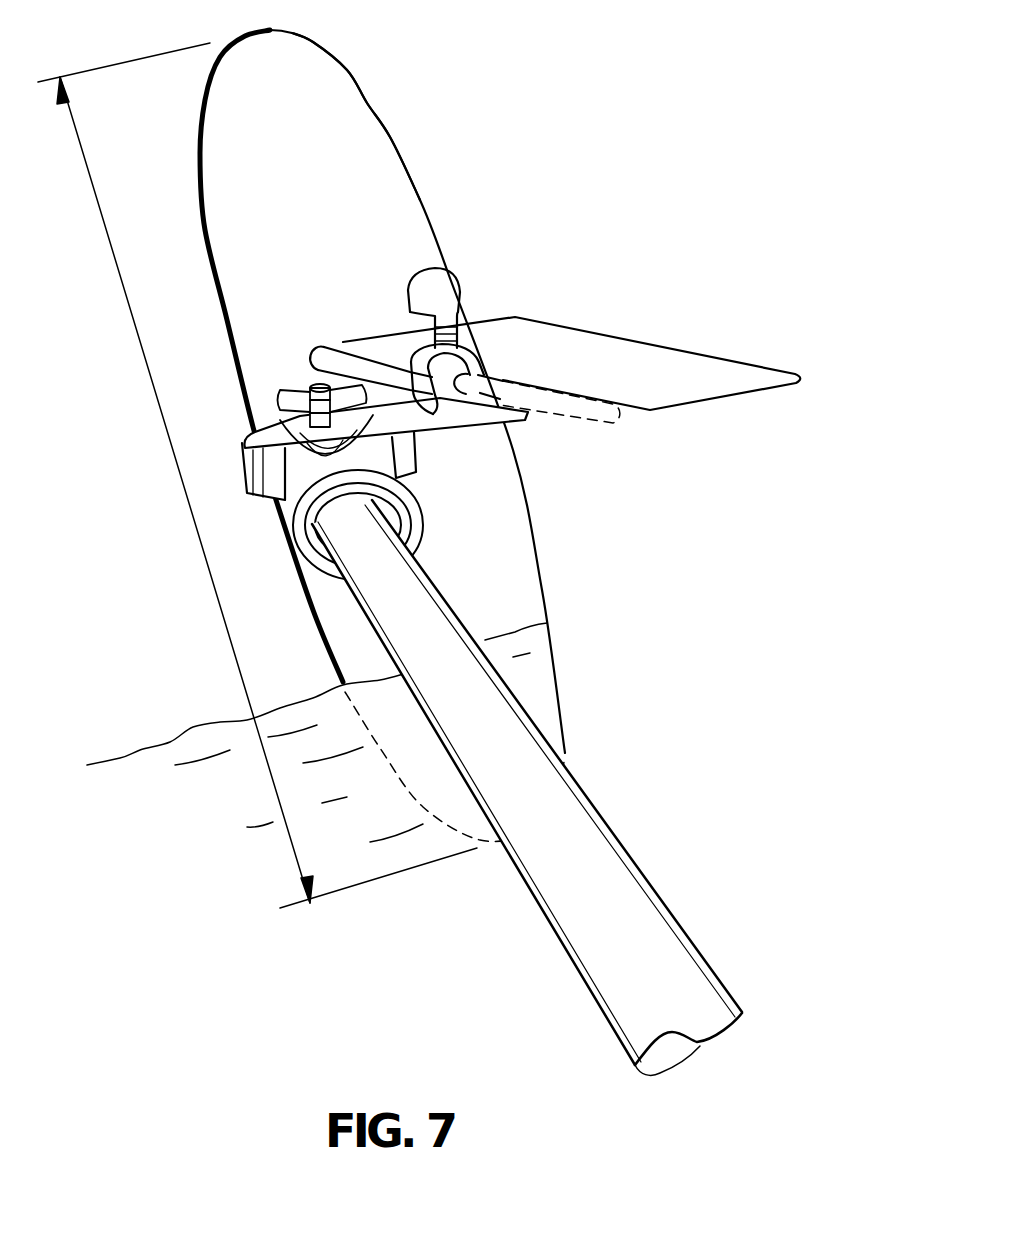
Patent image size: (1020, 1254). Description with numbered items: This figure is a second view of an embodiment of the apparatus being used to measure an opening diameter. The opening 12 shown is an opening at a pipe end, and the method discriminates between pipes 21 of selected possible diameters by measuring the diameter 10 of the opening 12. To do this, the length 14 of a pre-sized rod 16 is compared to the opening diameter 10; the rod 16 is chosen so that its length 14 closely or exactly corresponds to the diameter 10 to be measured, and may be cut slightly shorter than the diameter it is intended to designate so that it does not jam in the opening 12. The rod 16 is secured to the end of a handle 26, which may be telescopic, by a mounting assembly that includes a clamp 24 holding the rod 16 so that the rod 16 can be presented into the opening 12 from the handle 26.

The diameter 10 is at (419, 550).
The opening 12 is at (380, 112).
The length 14 is at (656, 336).
The pre-sized rod 16 is at (312, 358).
The pipe 21 is at (362, 60).
The clamp 24 is at (465, 360).
The handle 26 is at (575, 818).